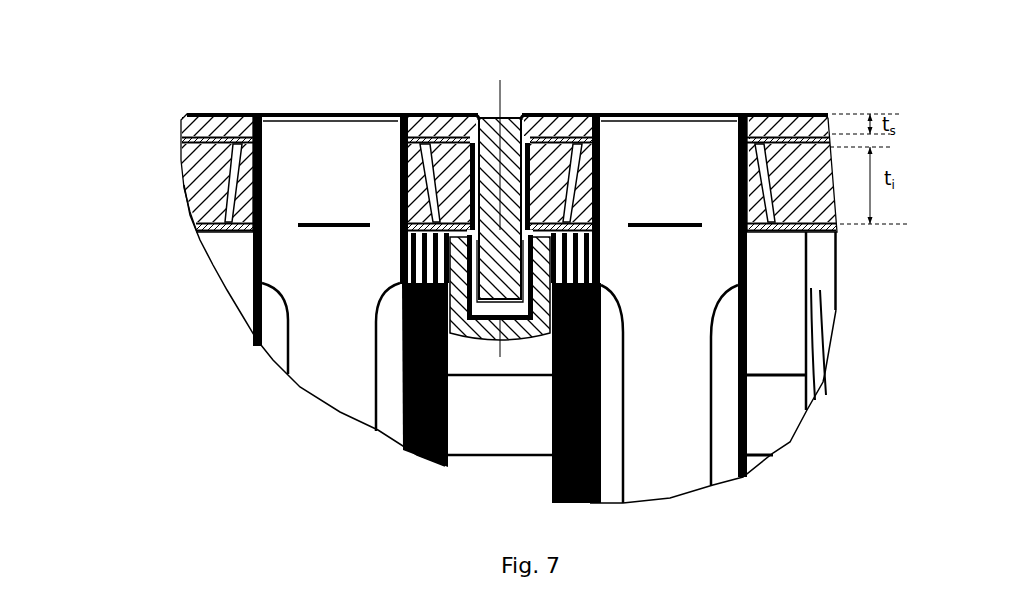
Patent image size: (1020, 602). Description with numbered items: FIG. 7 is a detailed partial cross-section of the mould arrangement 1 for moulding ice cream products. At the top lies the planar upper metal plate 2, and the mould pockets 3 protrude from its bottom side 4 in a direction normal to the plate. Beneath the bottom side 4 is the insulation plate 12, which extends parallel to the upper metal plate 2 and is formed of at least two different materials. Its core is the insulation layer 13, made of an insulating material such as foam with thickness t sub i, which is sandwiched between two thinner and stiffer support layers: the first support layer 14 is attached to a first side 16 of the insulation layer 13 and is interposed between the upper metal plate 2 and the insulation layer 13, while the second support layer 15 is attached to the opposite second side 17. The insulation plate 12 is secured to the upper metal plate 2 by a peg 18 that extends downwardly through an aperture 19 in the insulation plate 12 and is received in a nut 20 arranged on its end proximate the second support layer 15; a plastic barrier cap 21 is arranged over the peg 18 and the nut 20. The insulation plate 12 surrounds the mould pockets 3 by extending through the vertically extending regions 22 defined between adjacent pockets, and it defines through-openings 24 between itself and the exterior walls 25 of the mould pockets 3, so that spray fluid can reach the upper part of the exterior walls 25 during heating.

The mould arrangement 1 is at (215, 66).
The upper metal plate 2 is at (407, 112).
The mould pockets 3 is at (270, 277).
The bottom side 4 is at (212, 179).
The insulation plate 12 is at (500, 208).
The insulation layer 13 is at (182, 158).
The first support layer 14 is at (183, 125).
The second support layer 15 is at (215, 233).
The first side 16 is at (182, 142).
The second side 17 is at (228, 203).
The peg 18 is at (475, 130).
The aperture 19 is at (503, 128).
The nut 20 is at (553, 222).
The barrier cap 21 is at (495, 305).
The vertically extending regions 22 is at (490, 434).
The through-openings 24 is at (849, 299).
The exterior walls 25 is at (747, 170).